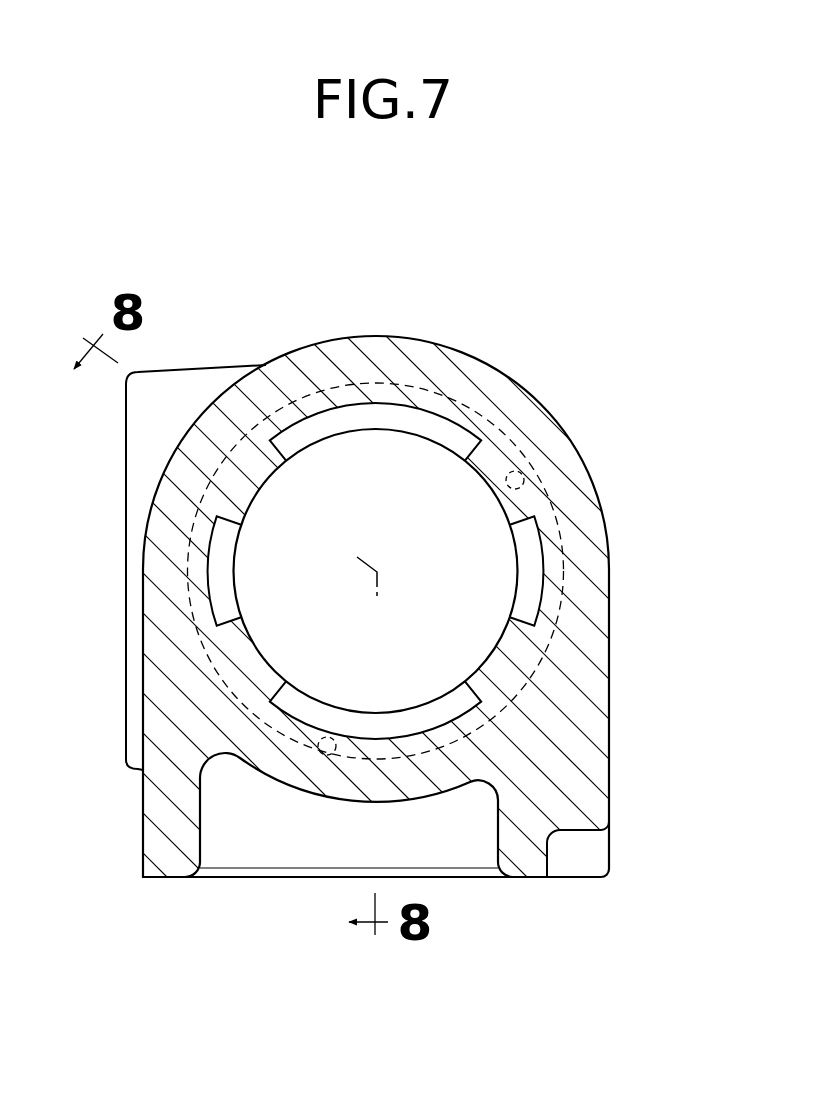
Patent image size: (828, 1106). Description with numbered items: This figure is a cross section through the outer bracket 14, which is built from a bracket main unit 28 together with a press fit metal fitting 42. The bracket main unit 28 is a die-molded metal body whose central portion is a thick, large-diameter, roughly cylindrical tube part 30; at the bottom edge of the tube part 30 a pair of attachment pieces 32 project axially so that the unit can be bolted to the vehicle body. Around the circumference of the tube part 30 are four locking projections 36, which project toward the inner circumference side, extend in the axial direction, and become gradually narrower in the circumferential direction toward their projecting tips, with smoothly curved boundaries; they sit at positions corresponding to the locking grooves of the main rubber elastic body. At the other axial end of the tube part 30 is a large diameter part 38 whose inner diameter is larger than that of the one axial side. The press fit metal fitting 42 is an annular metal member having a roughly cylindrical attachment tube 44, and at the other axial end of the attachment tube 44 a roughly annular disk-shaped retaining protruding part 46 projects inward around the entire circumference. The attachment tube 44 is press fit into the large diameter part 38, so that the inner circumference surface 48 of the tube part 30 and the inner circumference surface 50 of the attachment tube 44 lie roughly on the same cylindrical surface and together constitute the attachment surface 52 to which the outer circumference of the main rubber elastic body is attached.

The outer bracket 14 is at (653, 530).
The bracket main unit 28 is at (232, 366).
The tube part 30 is at (464, 386).
The attachment piece 32 is at (572, 859).
The locking projection 36 is at (250, 487).
The large diameter part 38 is at (318, 748).
The press fit metal fitting 42 is at (360, 711).
The attachment tube 44 is at (200, 601).
The retaining protruding part 46 is at (222, 538).
The inner circumference surface 48 is at (461, 732).
The inner circumference surface 50 is at (523, 483).
The attachment surface 52 is at (410, 410).